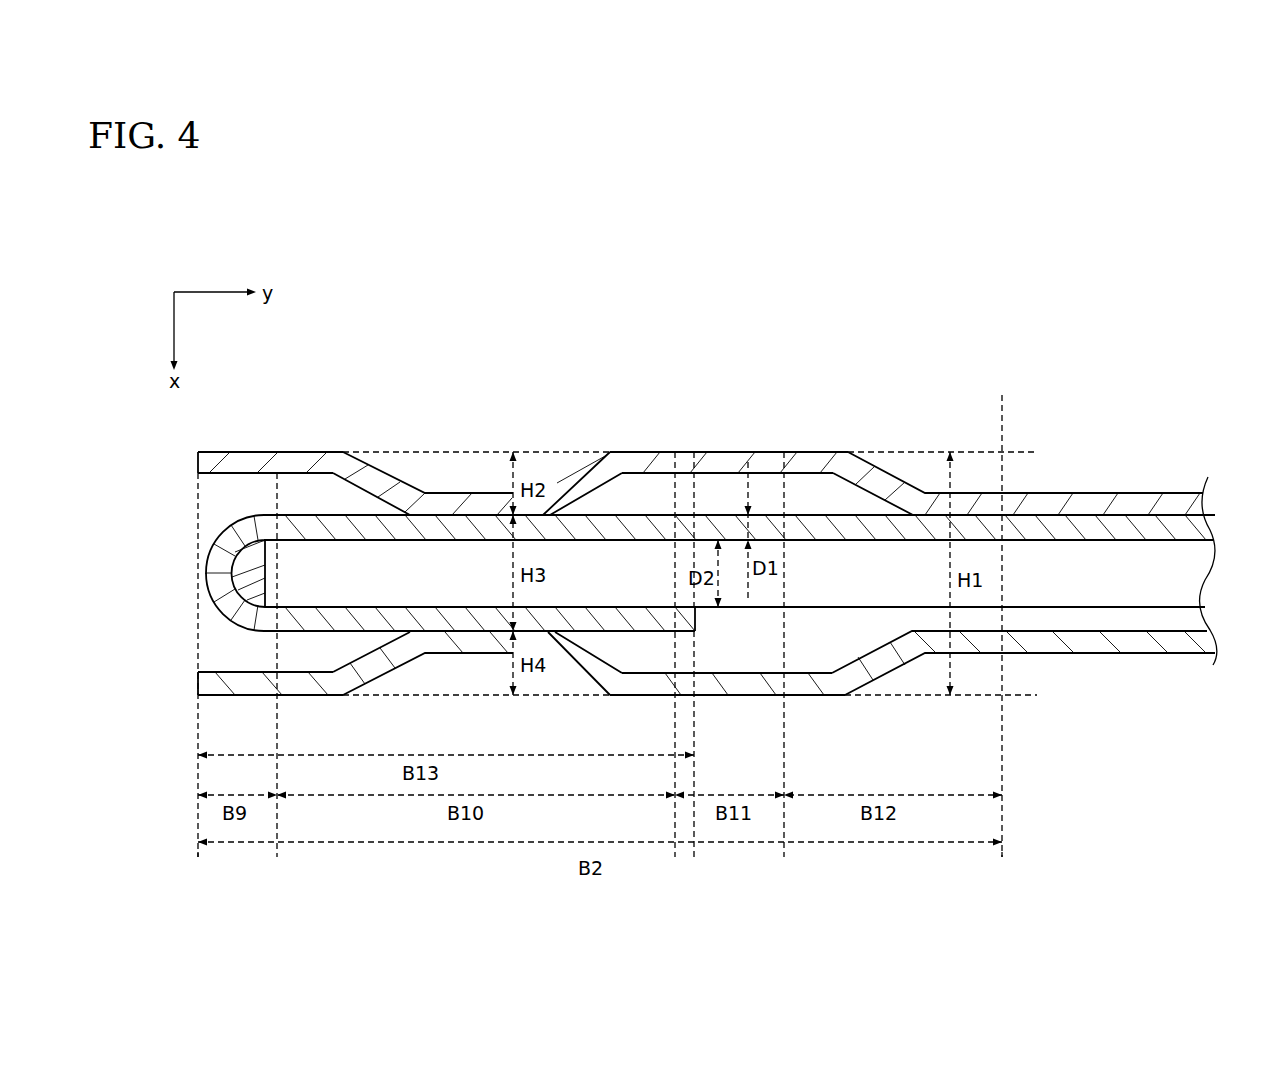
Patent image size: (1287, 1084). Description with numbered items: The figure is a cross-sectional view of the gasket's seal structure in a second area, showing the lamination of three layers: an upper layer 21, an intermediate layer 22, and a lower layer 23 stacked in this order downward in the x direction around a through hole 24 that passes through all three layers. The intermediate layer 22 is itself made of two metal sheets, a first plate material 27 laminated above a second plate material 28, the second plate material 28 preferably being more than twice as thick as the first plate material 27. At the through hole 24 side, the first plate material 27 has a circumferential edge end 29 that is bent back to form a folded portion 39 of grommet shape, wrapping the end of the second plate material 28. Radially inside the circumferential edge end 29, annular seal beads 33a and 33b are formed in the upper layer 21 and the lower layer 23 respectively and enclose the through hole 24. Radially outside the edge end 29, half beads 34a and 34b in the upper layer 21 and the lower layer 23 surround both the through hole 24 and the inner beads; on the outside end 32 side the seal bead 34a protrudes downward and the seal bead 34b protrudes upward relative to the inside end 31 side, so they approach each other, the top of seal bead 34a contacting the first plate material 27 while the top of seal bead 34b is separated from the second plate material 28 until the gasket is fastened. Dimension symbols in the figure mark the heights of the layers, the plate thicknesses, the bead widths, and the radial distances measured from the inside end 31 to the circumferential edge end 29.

The upper layer 21 is at (198, 458).
The intermediate layer 22 is at (217, 512).
The lower layer 23 is at (198, 636).
The through hole 24 is at (138, 518).
The first plate material 27 is at (653, 513).
The second plate material 28 is at (812, 609).
The circumferential edge end 29 is at (697, 617).
The inside end 31 is at (199, 870).
The outside end 32 is at (1005, 870).
The seal bead 33a is at (443, 492).
The seal bead 33b is at (447, 655).
The seal bead 34a is at (972, 492).
The seal bead 34b is at (967, 657).
The folded portion 39 is at (252, 512).